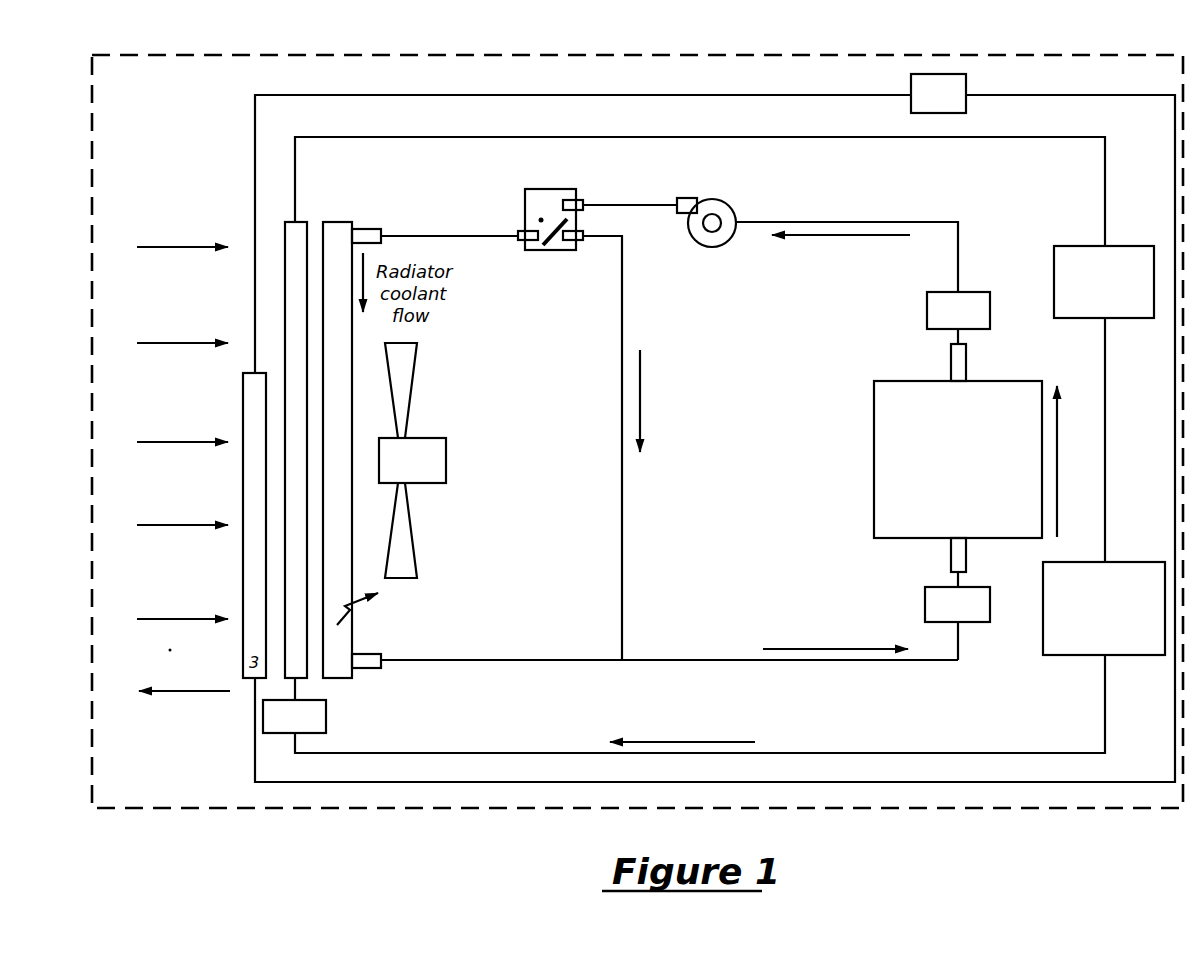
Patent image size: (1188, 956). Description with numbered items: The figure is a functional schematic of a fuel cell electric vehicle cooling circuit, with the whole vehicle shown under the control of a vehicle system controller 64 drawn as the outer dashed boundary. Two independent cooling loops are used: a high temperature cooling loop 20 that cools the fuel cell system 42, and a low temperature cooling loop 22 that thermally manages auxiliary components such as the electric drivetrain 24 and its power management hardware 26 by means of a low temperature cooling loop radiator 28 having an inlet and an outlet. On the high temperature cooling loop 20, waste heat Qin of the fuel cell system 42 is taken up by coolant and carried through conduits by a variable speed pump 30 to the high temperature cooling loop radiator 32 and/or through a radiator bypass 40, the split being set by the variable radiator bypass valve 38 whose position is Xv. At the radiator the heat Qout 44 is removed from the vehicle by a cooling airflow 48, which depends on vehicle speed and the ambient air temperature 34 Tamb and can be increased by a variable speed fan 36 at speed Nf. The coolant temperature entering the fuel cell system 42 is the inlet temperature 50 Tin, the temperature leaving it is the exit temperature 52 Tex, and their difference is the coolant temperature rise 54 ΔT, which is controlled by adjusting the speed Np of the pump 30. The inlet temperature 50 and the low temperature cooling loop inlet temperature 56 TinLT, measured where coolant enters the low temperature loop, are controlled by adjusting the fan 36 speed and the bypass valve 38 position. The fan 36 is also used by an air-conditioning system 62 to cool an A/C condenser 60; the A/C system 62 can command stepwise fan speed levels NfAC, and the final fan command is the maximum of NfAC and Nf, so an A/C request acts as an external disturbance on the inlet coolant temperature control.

The high temperature cooling loop 20 is at (840, 220).
The low temperature cooling loop 22 is at (572, 130).
The electric drivetrain 24 is at (1128, 246).
The power management hardware 26 is at (1132, 562).
The low temperature cooling loop radiator 28 is at (283, 273).
The pump 30 is at (735, 205).
The high temperature cooling loop radiator 32 is at (347, 224).
The ambient air temperature 34 is at (186, 198).
The fan 36 is at (426, 434).
The radiator bypass valve 38 is at (573, 189).
The radiator bypass 40 is at (623, 318).
The fuel cell system 42 is at (1007, 380).
The heat removed from the vehicle 44 is at (430, 630).
The cooling airflow 48 is at (130, 427).
The fuel cell system inlet temperature 50 is at (991, 604).
The fuel cell system exit temperature 52 is at (977, 292).
The coolant temperature rise 54 is at (1077, 452).
The low temperature cooling loop inlet temperature 56 is at (327, 723).
The A/C condenser 60 is at (243, 663).
The air-conditioning system 62 is at (966, 103).
The vehicle system controller 64 is at (240, 56).